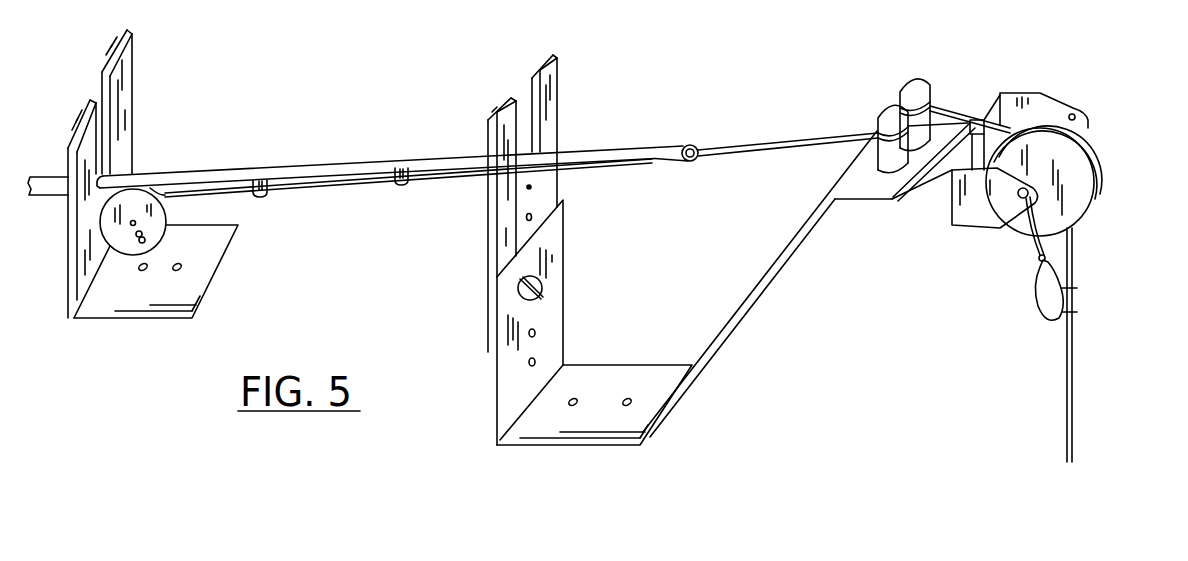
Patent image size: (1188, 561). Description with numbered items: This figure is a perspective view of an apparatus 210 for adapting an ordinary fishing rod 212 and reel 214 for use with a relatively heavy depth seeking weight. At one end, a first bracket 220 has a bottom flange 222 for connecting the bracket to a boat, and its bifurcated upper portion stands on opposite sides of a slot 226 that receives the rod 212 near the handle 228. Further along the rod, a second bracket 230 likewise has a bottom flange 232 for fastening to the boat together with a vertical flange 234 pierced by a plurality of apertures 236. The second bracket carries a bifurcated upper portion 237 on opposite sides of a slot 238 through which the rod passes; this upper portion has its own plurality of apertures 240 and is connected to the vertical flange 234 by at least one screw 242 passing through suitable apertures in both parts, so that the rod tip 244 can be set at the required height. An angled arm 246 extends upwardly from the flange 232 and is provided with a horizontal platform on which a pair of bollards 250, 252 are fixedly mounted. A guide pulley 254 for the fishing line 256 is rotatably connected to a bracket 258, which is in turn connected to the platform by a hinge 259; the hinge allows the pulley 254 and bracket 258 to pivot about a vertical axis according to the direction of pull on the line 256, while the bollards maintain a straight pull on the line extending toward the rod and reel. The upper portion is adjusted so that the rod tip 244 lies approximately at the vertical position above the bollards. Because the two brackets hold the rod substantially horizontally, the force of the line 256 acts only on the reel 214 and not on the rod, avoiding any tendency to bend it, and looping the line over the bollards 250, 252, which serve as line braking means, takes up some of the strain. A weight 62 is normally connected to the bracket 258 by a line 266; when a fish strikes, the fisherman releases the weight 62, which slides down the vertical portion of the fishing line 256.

The apparatus 210 is at (627, 71).
The fishing rod 212 is at (303, 166).
The reel 214 is at (168, 208).
The first bracket 220 is at (83, 279).
The bottom flange 222 is at (120, 300).
The slot 226 is at (177, 85).
The handle 228 is at (60, 192).
The second bracket 230 is at (515, 411).
The bottom flange 232 is at (630, 371).
The vertical flange 234 is at (543, 307).
The apertures 236 is at (537, 364).
The bifurcated upper portion 237 is at (553, 73).
The slot 238 is at (523, 105).
The apertures 240 is at (535, 187).
The screw 242 is at (538, 283).
The rod tip 244 is at (664, 150).
The angled arm 246 is at (877, 183).
The bollard 250 is at (886, 106).
The bollard 252 is at (912, 82).
The guide pulley 254 is at (1067, 163).
The fishing line 256 is at (1066, 393).
The bracket 258 is at (990, 213).
The hinge 259 is at (975, 124).
The line 266 is at (1040, 253).
The weight 62 is at (1047, 303).